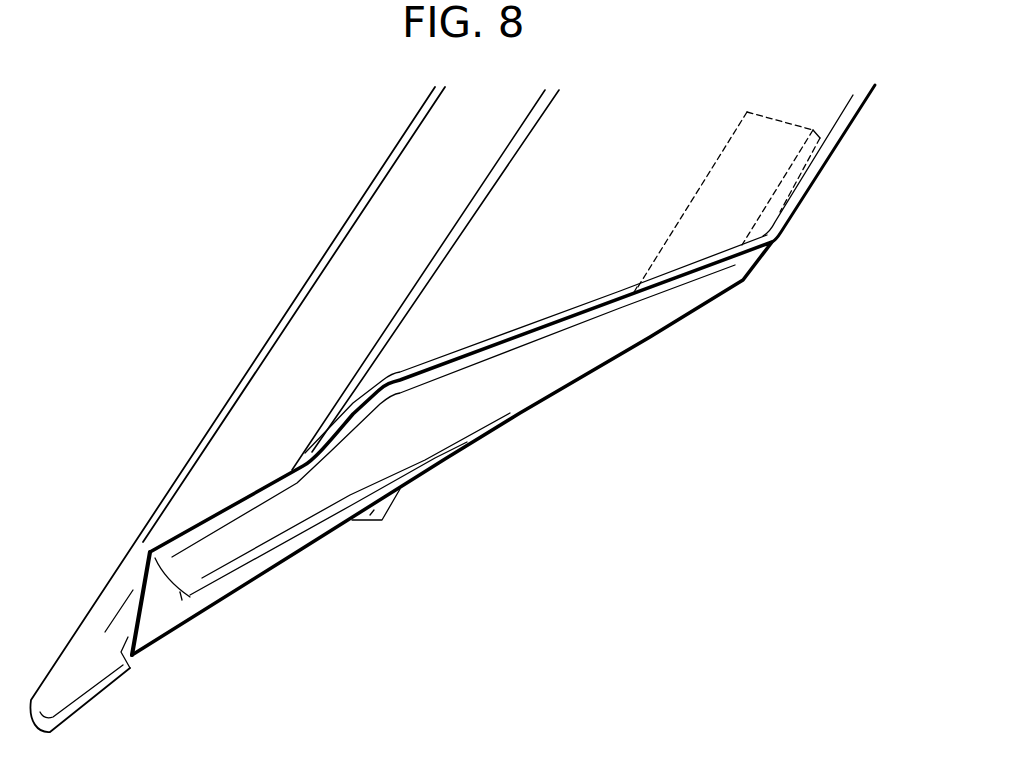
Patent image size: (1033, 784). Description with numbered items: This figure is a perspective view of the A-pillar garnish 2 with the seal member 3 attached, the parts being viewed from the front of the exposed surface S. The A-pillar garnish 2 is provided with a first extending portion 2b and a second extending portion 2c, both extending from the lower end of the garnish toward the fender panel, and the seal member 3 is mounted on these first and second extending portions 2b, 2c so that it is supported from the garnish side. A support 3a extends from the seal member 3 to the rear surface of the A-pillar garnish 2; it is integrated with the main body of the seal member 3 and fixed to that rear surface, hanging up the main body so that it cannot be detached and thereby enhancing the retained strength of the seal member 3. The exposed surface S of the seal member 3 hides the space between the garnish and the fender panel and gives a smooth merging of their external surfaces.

The A-pillar garnish 2 is at (294, 278).
The first extending portion 2b is at (363, 522).
The second extending portion 2c is at (130, 607).
The seal member 3 is at (568, 395).
The support 3a is at (720, 177).
The exposed surface S is at (440, 431).